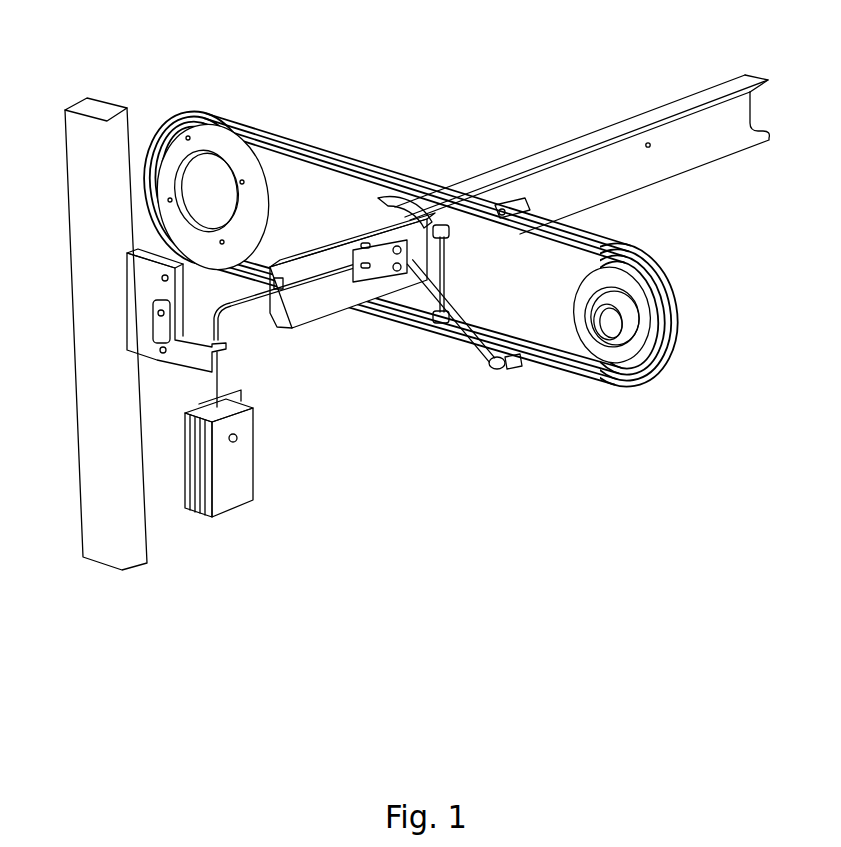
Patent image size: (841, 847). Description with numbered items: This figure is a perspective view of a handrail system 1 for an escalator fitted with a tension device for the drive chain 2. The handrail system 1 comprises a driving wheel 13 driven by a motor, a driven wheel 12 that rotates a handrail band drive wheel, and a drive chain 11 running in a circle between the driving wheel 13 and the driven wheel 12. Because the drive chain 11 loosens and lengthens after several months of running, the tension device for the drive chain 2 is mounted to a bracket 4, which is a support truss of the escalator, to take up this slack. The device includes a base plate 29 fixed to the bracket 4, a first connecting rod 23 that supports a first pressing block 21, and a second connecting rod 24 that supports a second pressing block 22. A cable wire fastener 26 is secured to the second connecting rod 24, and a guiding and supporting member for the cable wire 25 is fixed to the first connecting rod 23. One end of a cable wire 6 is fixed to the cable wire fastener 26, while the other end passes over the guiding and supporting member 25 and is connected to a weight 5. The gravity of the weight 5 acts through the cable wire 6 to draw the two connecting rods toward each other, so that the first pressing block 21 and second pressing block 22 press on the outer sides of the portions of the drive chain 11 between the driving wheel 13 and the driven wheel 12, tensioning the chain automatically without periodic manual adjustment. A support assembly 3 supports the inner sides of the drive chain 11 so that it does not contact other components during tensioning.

The handrail system 1 is at (456, 202).
The tension device for the drive chain 2 is at (540, 212).
The support assembly 3 is at (388, 212).
The bracket 4 is at (675, 112).
The weight 5 is at (233, 490).
The cable wire 6 is at (247, 300).
The drive chain 11 is at (375, 158).
The driven wheel 12 is at (643, 350).
The driving wheel 13 is at (176, 147).
The first pressing block 21 is at (513, 217).
The second pressing block 22 is at (520, 373).
The first connecting rod 23 is at (453, 217).
The second connecting rod 24 is at (473, 347).
The guiding and supporting member for the cable wire 25 is at (423, 220).
The cable wire fastener 26 is at (437, 337).
The base plate 29 is at (386, 282).